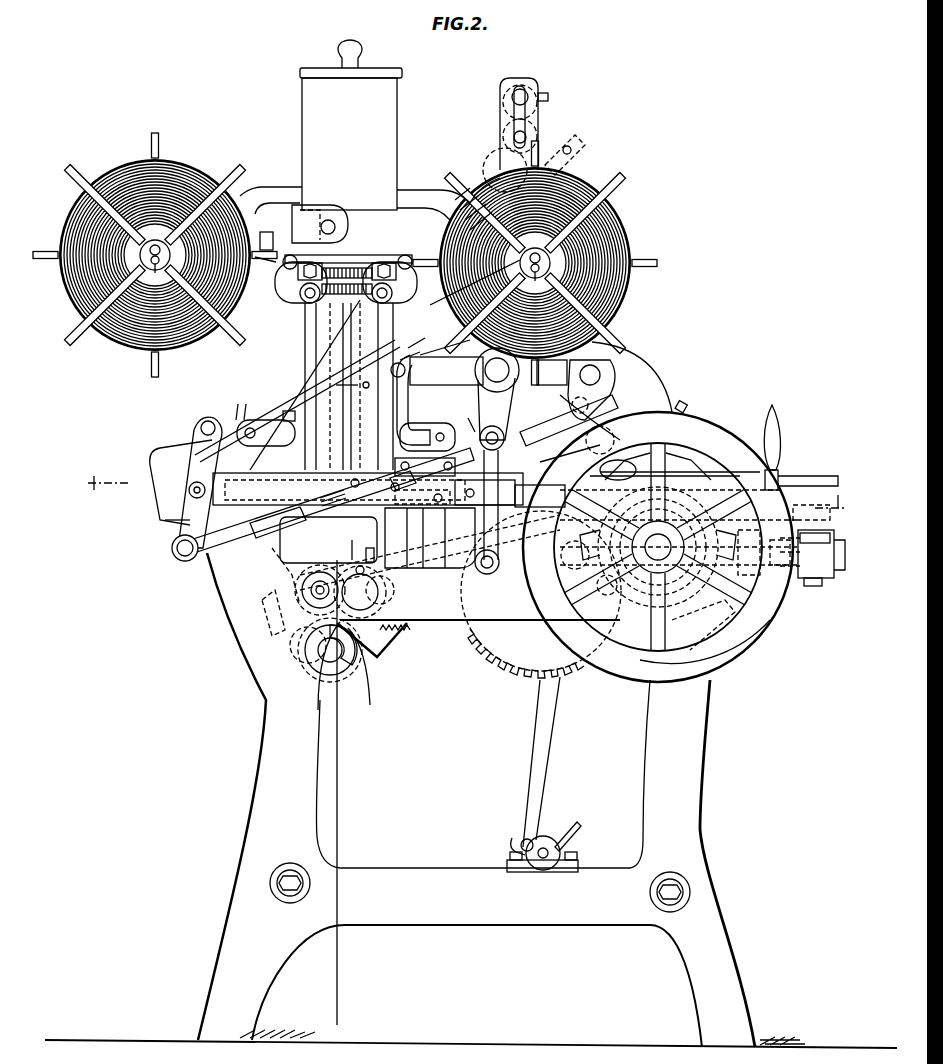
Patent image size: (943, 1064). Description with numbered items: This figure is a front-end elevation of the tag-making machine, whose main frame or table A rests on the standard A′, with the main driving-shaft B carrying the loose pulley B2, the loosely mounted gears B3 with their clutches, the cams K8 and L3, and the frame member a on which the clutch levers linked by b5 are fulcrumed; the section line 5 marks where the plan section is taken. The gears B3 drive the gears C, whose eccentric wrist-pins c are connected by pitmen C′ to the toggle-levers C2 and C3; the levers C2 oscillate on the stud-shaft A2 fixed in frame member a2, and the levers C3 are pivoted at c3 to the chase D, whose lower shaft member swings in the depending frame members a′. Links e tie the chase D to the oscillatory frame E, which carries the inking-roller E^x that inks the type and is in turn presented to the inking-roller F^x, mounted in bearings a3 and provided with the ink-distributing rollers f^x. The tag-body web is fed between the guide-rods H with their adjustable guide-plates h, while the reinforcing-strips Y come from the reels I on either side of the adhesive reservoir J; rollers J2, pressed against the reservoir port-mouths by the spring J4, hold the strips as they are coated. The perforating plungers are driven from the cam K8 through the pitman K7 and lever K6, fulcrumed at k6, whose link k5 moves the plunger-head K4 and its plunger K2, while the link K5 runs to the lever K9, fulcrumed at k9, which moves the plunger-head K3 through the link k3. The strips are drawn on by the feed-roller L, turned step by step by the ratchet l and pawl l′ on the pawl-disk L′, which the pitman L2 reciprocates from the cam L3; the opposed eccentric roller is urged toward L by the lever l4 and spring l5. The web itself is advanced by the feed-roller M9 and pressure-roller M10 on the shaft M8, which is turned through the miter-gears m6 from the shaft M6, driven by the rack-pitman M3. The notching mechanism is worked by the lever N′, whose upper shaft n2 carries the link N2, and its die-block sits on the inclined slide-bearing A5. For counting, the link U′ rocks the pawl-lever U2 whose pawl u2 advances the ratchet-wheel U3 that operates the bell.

The reel I is at (163, 150).
The reservoir J is at (351, 125).
The inclined slide-bearing A5 is at (266, 237).
The spring J4 is at (350, 238).
The roller J2 is at (346, 292).
The guide-rod H is at (340, 372).
The guide-plate h is at (346, 386).
The web-feeding roller M9 is at (297, 401).
The pressure-roller M10 is at (439, 342).
The pivotal connection c3 is at (413, 346).
The toggle-lever C3 is at (446, 371).
The chase D is at (405, 395).
The pitman C′ is at (497, 454).
The link k5 is at (465, 416).
The fulcrum k6 is at (479, 569).
The link e is at (569, 420).
The toggle-lever C2 is at (552, 372).
The stud-shaft A2 is at (590, 375).
The frame member a2 is at (632, 370).
The oscillatory frame E is at (673, 398).
The block b is at (681, 409).
The main frame A is at (368, 489).
The die-plunger K2 is at (425, 449).
The plunger-head K3 is at (266, 428).
The link k3 is at (235, 407).
The plunger-head K4 is at (422, 497).
The lever K6 is at (485, 500).
The pitman K7 is at (540, 497).
The lever S is at (186, 482).
The link K5 is at (323, 508).
The lever K9 is at (165, 521).
The fulcrum k9 is at (210, 492).
The section line 5 is at (466, 482).
The shaft M8 is at (328, 540).
The depending frame member a′ is at (430, 538).
The ratchet l is at (357, 553).
The pawl l′ is at (372, 547).
The lever l4 is at (281, 575).
The spring l5 is at (265, 612).
The feed-roller L is at (335, 591).
The pitman L2 is at (430, 563).
The shaft M6 is at (322, 656).
The miter-gears m6 is at (298, 645).
The pawl-disk L′ is at (372, 649).
The rack-pitman M3 is at (425, 635).
The main driving-shaft B is at (661, 547).
The loose pulley B2 is at (703, 625).
The cam L3 is at (665, 484).
The lever N′ is at (618, 470).
The link N2 is at (565, 452).
The shaft n2 is at (603, 435).
The eccentric wrist-pin c is at (589, 563).
The cam K8 is at (705, 552).
The gear B3 is at (804, 491).
The frame member a is at (815, 536).
The link b5 is at (809, 591).
The gear C is at (541, 594).
The standard A′ is at (471, 800).
The reinforcing-strip Y is at (346, 805).
The link U′ is at (540, 730).
The pawl-lever U2 is at (510, 834).
The pawl u2 is at (540, 838).
The ratchet-wheel U3 is at (562, 848).
The bearing a3 is at (545, 140).